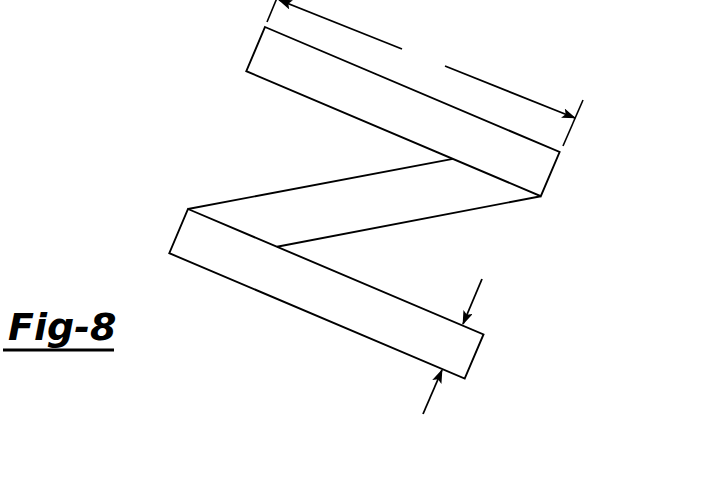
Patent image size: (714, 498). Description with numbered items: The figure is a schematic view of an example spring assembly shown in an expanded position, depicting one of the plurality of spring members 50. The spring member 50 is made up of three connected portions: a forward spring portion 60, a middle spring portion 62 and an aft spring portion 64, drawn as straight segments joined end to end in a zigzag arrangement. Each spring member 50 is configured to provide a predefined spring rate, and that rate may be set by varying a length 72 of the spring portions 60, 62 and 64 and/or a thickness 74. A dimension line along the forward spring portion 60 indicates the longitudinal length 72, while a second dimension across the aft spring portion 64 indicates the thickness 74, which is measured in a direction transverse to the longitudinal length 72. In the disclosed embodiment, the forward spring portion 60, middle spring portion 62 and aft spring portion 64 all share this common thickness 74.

The spring member 50 is at (382, 200).
The forward spring portion 60 is at (300, 75).
The middle spring portion 62 is at (453, 200).
The aft spring portion 64 is at (307, 298).
The length 72 is at (425, 73).
The thickness 74 is at (477, 297).